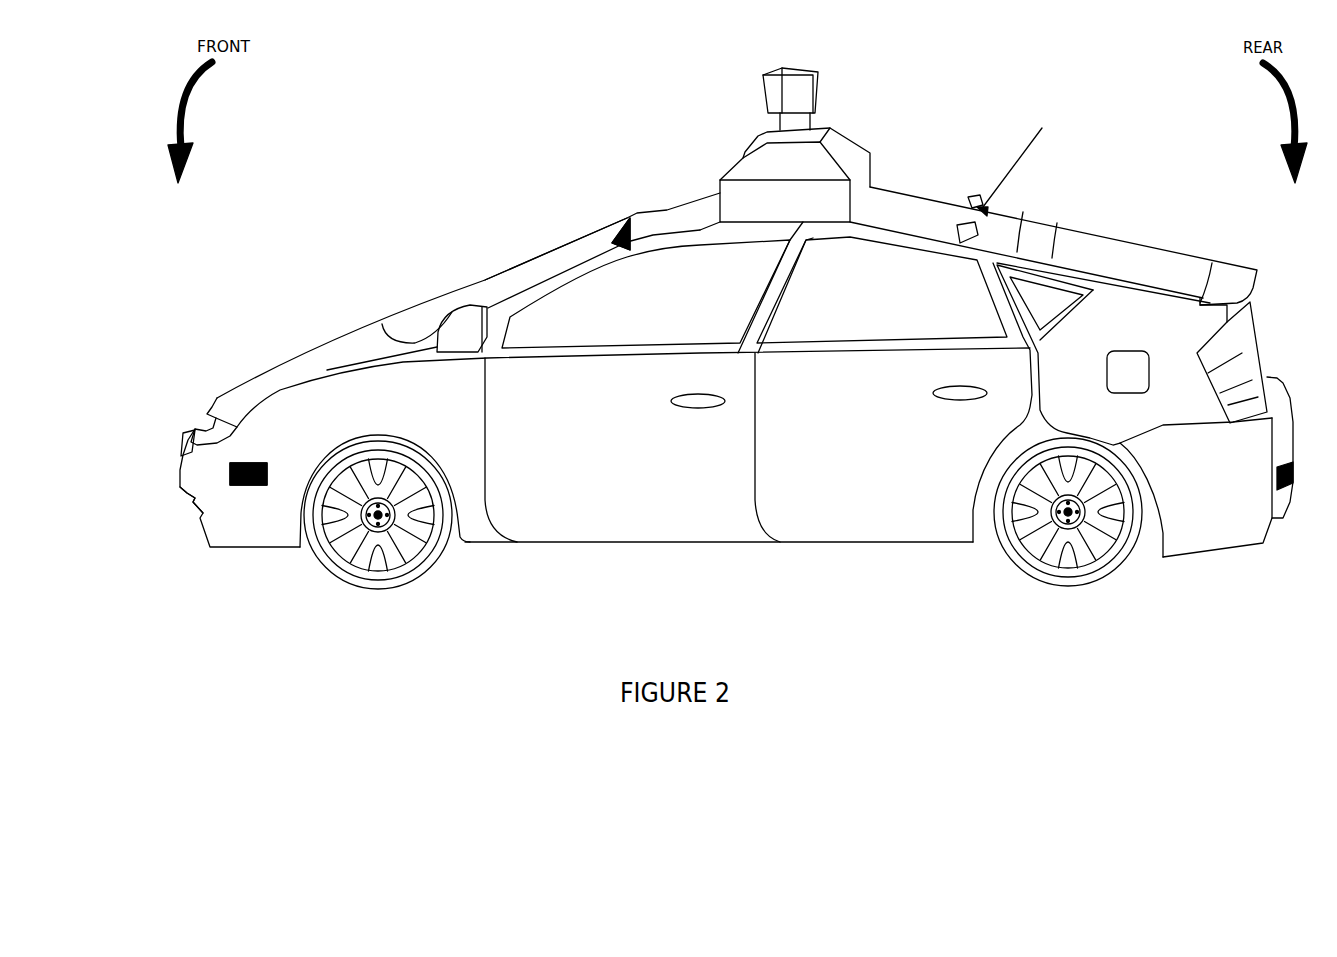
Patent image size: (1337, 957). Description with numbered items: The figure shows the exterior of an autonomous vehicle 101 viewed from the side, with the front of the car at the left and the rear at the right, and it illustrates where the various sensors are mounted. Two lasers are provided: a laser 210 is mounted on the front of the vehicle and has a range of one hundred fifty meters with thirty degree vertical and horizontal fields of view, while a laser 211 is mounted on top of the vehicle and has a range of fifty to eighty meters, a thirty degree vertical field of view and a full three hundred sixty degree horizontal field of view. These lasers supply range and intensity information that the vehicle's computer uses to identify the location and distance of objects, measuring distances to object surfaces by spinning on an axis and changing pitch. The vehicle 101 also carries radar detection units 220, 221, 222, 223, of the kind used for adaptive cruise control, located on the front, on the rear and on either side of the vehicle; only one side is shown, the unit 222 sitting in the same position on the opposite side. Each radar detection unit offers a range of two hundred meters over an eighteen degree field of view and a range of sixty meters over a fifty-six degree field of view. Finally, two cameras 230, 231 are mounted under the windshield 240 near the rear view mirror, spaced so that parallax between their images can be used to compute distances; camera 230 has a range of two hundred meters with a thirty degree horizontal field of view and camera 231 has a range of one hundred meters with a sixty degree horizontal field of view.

The vehicle 101 is at (830, 566).
The laser 210 is at (182, 447).
The laser 211 is at (772, 87).
The radar detection unit 220 is at (195, 512).
The radar detection unit 221 is at (252, 485).
The radar detection unit 222 is at (470, 543).
The radar detection unit 223 is at (1293, 490).
The camera 230 is at (617, 240).
The camera 231 is at (621, 234).
The windshield 240 is at (547, 270).